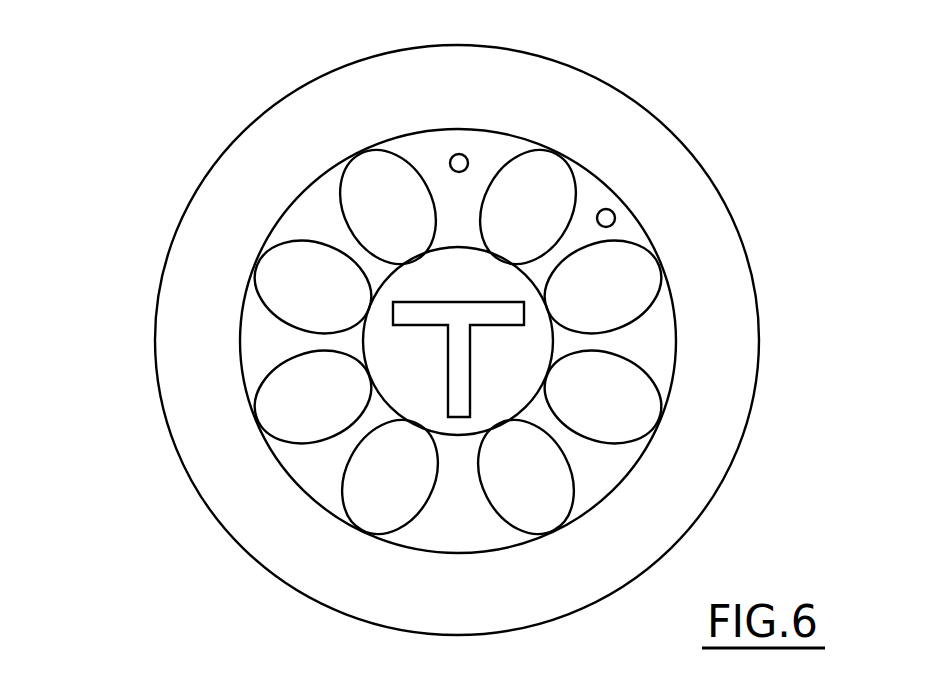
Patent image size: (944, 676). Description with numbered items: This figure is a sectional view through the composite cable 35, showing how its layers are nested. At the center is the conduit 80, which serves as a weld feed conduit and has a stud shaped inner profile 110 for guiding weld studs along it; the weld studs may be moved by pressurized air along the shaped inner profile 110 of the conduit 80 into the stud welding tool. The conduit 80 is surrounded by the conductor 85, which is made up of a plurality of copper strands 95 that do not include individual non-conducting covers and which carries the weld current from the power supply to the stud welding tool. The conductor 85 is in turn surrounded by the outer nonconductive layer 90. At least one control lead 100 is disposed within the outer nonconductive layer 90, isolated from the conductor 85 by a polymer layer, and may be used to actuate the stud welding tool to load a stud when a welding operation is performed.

The composite cable 35 is at (171, 240).
The outer nonconductive layer 90 is at (260, 138).
The conductor 85 is at (303, 470).
The copper strands 95 is at (357, 530).
The control lead 100 is at (467, 162).
The conduit 80 is at (525, 408).
The stud shaped inner profile 110 is at (458, 368).